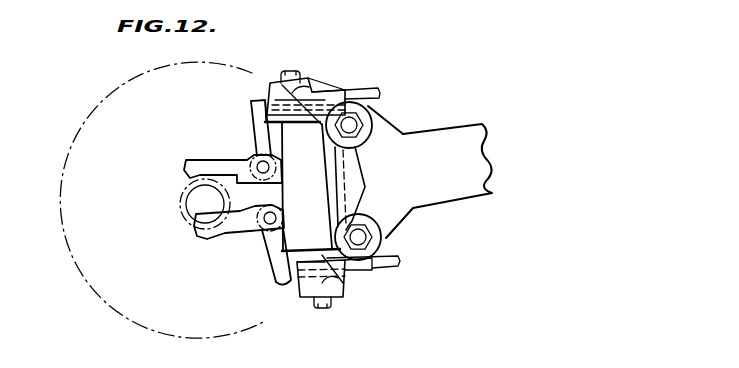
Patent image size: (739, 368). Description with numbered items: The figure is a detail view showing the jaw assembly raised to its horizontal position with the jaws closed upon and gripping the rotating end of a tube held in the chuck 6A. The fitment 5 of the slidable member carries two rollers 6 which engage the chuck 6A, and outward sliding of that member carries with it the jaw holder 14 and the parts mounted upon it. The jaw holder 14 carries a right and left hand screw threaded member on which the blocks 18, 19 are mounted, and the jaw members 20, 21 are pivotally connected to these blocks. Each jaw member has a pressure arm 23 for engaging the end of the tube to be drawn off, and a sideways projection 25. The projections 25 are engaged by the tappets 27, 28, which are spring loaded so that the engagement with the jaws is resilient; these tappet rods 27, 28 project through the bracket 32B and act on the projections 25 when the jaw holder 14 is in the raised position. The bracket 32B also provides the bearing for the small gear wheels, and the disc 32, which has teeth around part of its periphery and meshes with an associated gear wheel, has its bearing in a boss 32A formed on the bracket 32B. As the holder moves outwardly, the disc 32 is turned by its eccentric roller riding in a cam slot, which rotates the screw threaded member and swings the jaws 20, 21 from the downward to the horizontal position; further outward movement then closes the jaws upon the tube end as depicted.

The fitment 5 is at (440, 140).
The rollers 6 is at (371, 108).
The chuck 6A is at (61, 194).
The jaw holder 14 is at (300, 130).
The block 18 is at (258, 137).
The block 19 is at (268, 255).
The jaw member 20 is at (237, 238).
The jaw member 21 is at (222, 165).
The pressure arm 23 is at (195, 156).
The sideways projection 25 is at (179, 211).
The tappet 27 is at (361, 92).
The tappet 28 is at (390, 262).
The disc 32 is at (303, 113).
The boss 32A is at (279, 84).
The bracket 32B is at (346, 90).